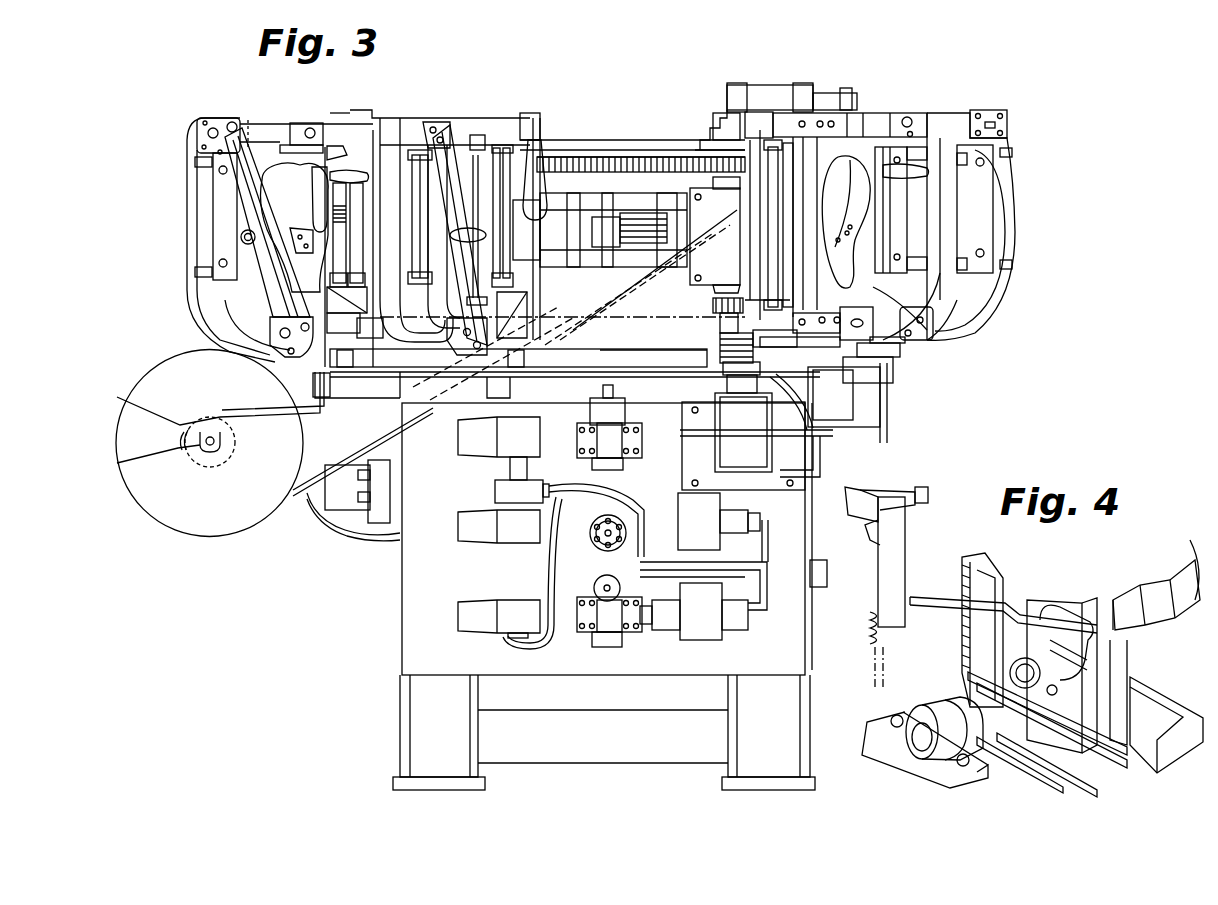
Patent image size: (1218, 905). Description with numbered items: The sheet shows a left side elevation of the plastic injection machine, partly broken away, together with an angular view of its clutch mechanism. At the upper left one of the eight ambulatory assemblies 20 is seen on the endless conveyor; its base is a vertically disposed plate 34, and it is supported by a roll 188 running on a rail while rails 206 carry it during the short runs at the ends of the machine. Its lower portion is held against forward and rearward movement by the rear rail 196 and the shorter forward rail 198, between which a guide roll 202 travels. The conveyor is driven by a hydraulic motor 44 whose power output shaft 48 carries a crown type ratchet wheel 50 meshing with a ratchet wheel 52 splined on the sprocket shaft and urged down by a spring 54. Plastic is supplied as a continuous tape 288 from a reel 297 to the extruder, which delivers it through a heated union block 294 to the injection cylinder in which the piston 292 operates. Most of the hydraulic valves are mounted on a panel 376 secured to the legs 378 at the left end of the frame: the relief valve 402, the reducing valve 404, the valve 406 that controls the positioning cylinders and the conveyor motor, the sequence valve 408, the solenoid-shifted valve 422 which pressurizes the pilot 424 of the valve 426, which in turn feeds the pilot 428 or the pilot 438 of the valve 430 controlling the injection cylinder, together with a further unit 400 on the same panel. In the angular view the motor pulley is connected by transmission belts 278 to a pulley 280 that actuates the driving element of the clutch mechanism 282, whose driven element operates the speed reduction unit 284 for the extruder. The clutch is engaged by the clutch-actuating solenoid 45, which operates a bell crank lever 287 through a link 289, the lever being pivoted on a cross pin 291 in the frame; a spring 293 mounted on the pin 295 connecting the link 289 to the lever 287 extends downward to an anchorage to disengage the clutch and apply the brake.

In FIG. 3, the ambulatory assembly 20 is at (928, 97).
In FIG. 3, the vertically disposed plate 34 is at (875, 110).
In FIG. 3, the hydraulic motor 44 is at (760, 448).
In FIG. 4, the bracket fastener 45 is at (922, 500).
In FIG. 3, the power output shaft 48 is at (748, 398).
In FIG. 3, the crown type ratchet wheel 50 is at (758, 388).
In FIG. 3, the ratchet wheel 52 is at (725, 369).
In FIG. 3, the spring 54 is at (720, 350).
In FIG. 3, the supporting roll 188 is at (778, 82).
In FIG. 3, the rear rail 196 is at (860, 368).
In FIG. 3, the forward rail 198 is at (877, 350).
In FIG. 3, the guide roll 202 is at (772, 347).
In FIG. 3, the rails 206 is at (565, 140).
In FIG. 3, the continuous tape 288 is at (380, 445).
In FIG. 3, the piston 292 is at (650, 212).
In FIG. 3, the block 294 is at (700, 268).
In FIG. 3, the reel 297 is at (212, 527).
In FIG. 3, the panel 376 is at (402, 577).
In FIG. 3, the legs 378 is at (412, 729).
In FIG. 3, the solenoid valve 400 is at (480, 628).
In FIG. 3, the relief valve 402 is at (602, 538).
In FIG. 3, the reducing valve 404 is at (613, 644).
In FIG. 3, the valve 406 is at (480, 545).
In FIG. 3, the sequence valve 408 is at (612, 466).
In FIG. 3, the valve 422 is at (470, 449).
In FIG. 3, the pilot 424 is at (740, 517).
In FIG. 3, the valve 426 is at (695, 518).
In FIG. 3, the pilot 428 is at (735, 623).
In FIG. 3, the valve 430 is at (705, 630).
In FIG. 3, the pilot 438 is at (666, 618).
In FIG. 4, the transmission belts 278 is at (1128, 760).
In FIG. 4, the pulley 280 is at (940, 702).
In FIG. 4, the clutch mechanism 282 is at (1081, 597).
In FIG. 4, the speed reduction unit 284 is at (1180, 570).
In FIG. 4, the bell crank lever 287 is at (935, 616).
In FIG. 4, the link 289 is at (905, 592).
In FIG. 4, the cross pin 291 is at (990, 610).
In FIG. 4, the spring 293 is at (875, 650).
In FIG. 4, the pin 295 is at (873, 612).